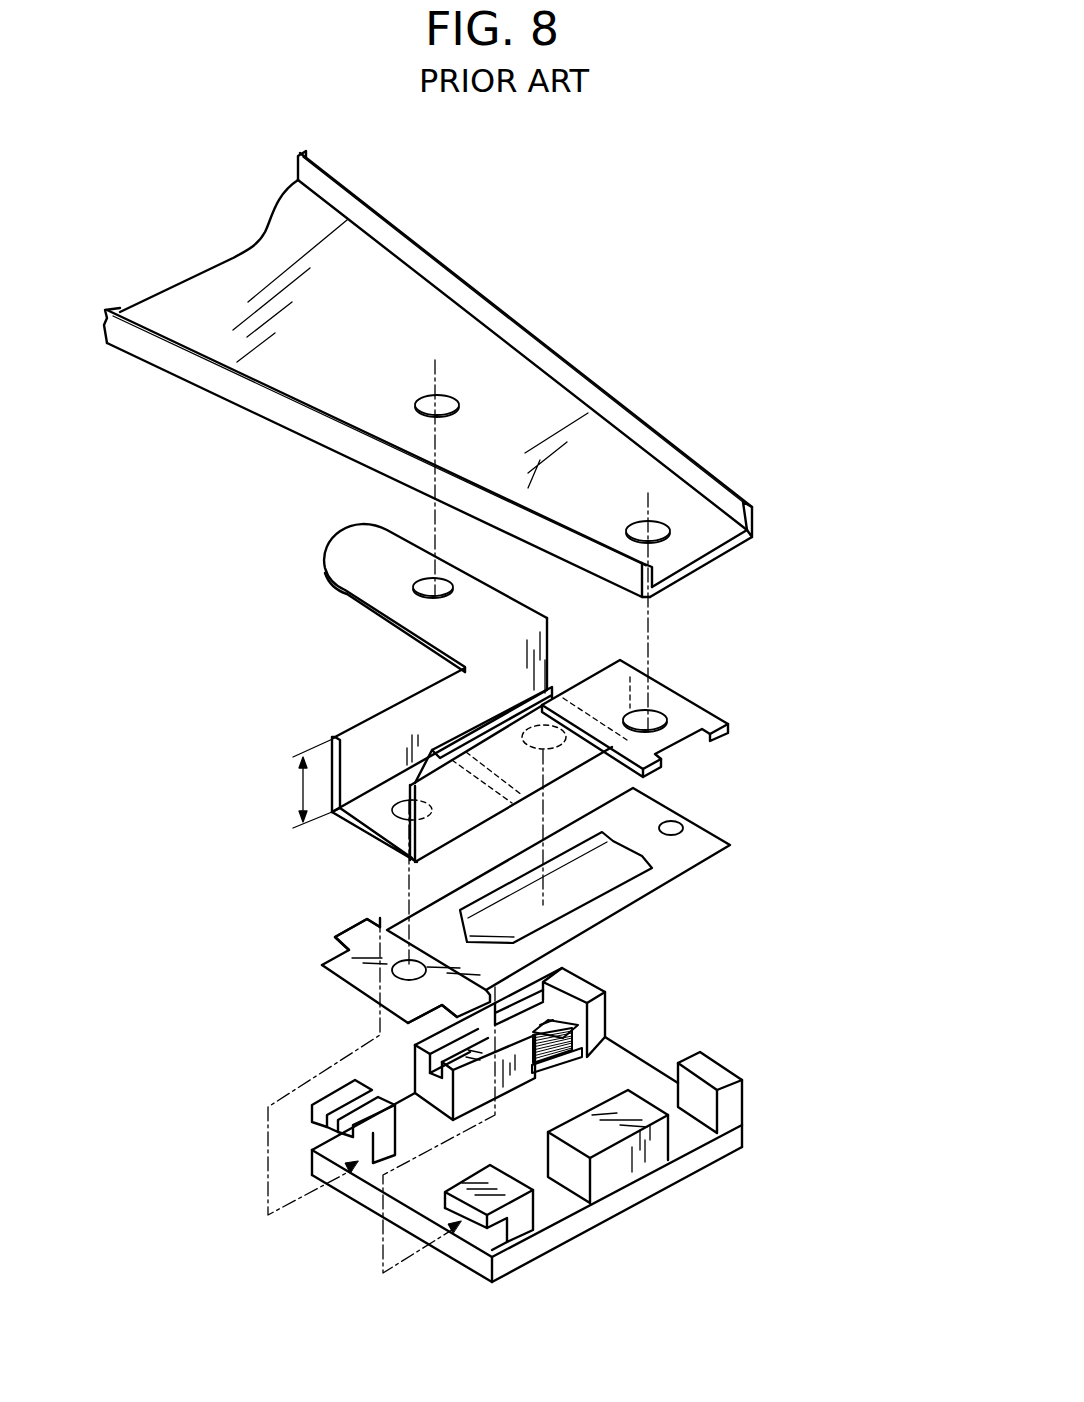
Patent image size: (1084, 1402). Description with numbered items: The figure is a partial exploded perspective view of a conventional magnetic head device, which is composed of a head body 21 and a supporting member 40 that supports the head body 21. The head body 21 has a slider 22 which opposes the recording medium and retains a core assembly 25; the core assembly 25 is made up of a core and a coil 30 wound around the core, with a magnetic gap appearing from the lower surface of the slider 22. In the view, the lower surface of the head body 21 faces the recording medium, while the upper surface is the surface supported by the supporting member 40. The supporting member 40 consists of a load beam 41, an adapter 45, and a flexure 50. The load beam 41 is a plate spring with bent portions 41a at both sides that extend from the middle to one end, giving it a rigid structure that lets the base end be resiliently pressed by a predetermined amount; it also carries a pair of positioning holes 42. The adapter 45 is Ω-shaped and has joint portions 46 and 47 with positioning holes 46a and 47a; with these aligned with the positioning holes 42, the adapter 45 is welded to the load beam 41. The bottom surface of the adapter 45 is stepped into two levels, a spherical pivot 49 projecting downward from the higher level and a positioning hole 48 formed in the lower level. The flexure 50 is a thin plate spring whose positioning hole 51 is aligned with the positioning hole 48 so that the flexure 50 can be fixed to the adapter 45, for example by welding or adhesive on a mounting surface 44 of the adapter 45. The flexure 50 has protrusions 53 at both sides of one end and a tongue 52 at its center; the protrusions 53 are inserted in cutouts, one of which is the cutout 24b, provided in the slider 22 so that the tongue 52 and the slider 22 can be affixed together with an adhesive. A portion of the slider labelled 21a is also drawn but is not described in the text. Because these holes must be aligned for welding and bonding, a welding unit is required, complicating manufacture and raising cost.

The supporting member 40 is at (874, 420).
The load beam 41 is at (473, 230).
The bent portions 41a is at (280, 402).
The positioning holes 42 is at (420, 415).
The joint portion 47 is at (370, 573).
The positioning hole 47a is at (420, 595).
The mounting surface 44 is at (370, 823).
The positioning hole 48 is at (397, 818).
The adapter 45 is at (720, 690).
The joint portion 46 is at (668, 693).
The positioning hole 46a is at (657, 725).
The spherical pivot 49 is at (557, 748).
The flexure 50 is at (752, 835).
The tongue 52 is at (583, 880).
The positioning hole 51 is at (380, 967).
The protrusions 53 is at (358, 935).
The head body 21 is at (770, 1083).
The slider 22 is at (703, 1190).
The slotted post 21a is at (342, 1150).
The cutout 24b is at (487, 1243).
The core assembly 25 is at (598, 971).
The coil 30 is at (563, 1057).